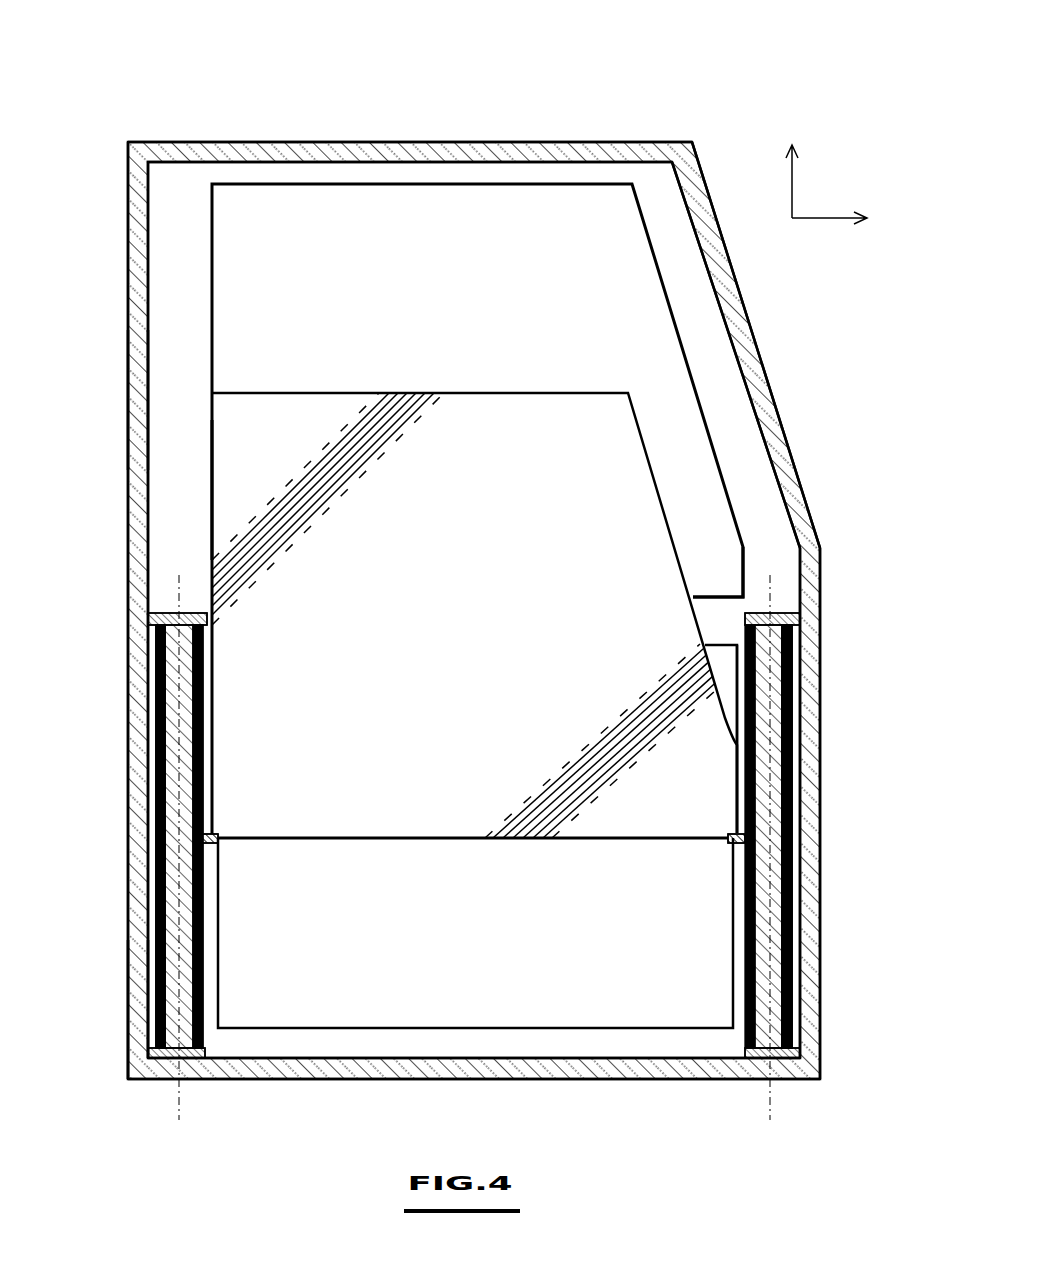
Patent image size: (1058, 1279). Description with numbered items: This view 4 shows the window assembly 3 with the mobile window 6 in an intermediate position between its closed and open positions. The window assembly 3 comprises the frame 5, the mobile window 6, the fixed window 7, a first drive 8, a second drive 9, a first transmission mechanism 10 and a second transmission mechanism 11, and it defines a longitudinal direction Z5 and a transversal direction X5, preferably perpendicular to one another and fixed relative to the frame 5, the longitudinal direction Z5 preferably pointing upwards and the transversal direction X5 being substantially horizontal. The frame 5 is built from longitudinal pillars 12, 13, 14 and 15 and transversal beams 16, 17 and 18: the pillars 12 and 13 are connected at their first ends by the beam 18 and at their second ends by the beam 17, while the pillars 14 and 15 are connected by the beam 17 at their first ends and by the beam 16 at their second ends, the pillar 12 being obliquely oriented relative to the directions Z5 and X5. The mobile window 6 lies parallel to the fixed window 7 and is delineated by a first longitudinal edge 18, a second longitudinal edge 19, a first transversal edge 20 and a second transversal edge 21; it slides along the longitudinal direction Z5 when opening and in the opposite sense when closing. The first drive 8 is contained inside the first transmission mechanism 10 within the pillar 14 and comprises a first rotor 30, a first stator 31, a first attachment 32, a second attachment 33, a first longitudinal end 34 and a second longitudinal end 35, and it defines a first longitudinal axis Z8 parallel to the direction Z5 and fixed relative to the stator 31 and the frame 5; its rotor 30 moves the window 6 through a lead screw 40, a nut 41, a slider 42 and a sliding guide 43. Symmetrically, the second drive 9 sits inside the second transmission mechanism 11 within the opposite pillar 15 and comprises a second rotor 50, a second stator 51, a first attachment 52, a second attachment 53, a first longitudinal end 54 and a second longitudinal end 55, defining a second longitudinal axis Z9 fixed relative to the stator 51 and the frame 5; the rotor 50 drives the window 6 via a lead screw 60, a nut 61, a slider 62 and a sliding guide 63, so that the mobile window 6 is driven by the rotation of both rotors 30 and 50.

The window assembly 3 is at (365, 140).
The device arrangement 4 is at (278, 87).
The frame 5 is at (137, 182).
The mobile window 6 is at (474, 613).
The fixed window 7 is at (475, 933).
The first drive 8 is at (781, 853).
The second drive 9 is at (172, 857).
The first transmission mechanism 10 is at (796, 905).
The second transmission mechanism 11 is at (156, 916).
The longitudinal pillar 12 is at (724, 383).
The longitudinal pillar 13 is at (182, 394).
The longitudinal pillar 14 is at (796, 978).
The longitudinal pillar 15 is at (137, 1005).
The transversal beam 16 is at (298, 1045).
The transversal beam 17 is at (715, 608).
The transversal beam 18 is at (493, 175).
The second longitudinal edge 19 is at (212, 485).
The first transversal edge 20 is at (548, 840).
The second transversal edge 21 is at (520, 390).
The first rotor 30 is at (793, 697).
The first stator 31 is at (795, 748).
The first attachment 32 is at (800, 1050).
The second attachment 33 is at (800, 617).
The first longitudinal end 34 is at (779, 1062).
The second longitudinal end 35 is at (788, 611).
The lead screw 40 is at (745, 700).
The nut 41 is at (740, 833).
The slider 42 is at (740, 843).
The sliding guide 43 is at (745, 738).
The second rotor 50 is at (160, 733).
The second stator 51 is at (158, 793).
The first attachment 52 is at (180, 1052).
The second attachment 53 is at (150, 624).
The first longitudinal end 54 is at (158, 1062).
The second longitudinal end 55 is at (160, 612).
The lead screw 60 is at (205, 730).
The nut 61 is at (213, 832).
The slider 62 is at (215, 845).
The sliding guide 63 is at (203, 658).
The longitudinal direction Z5 is at (795, 166).
The transversal direction X5 is at (845, 215).
The first longitudinal axis Z8 is at (770, 834).
The second longitudinal axis Z9 is at (180, 834).